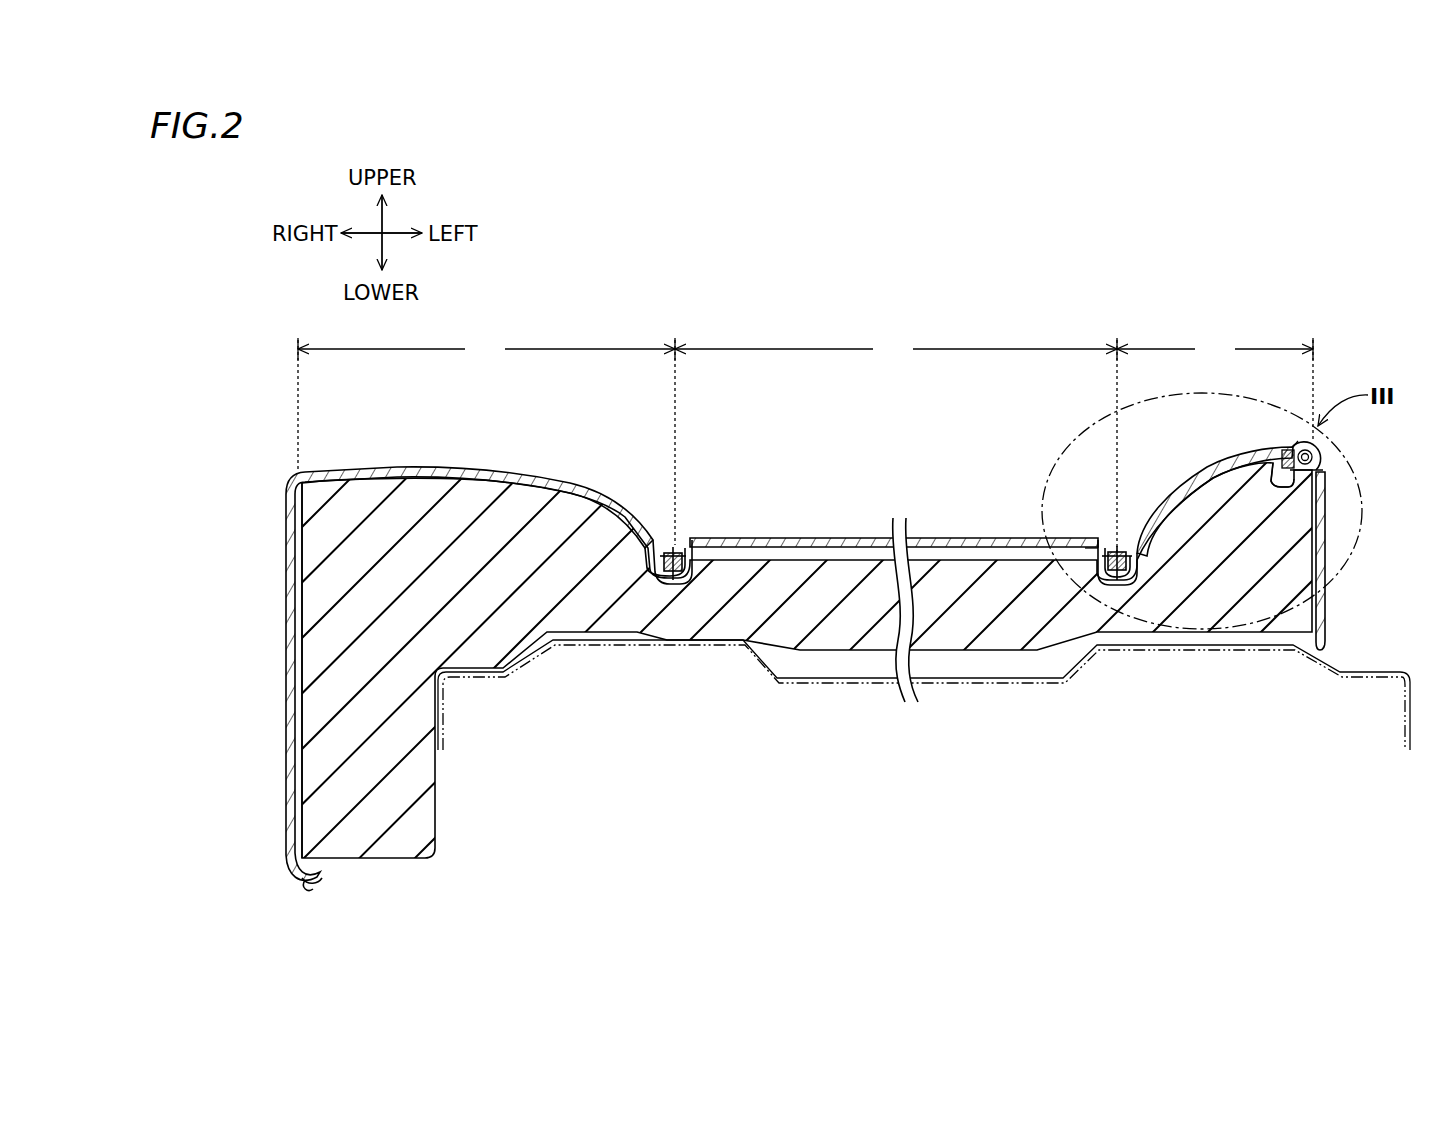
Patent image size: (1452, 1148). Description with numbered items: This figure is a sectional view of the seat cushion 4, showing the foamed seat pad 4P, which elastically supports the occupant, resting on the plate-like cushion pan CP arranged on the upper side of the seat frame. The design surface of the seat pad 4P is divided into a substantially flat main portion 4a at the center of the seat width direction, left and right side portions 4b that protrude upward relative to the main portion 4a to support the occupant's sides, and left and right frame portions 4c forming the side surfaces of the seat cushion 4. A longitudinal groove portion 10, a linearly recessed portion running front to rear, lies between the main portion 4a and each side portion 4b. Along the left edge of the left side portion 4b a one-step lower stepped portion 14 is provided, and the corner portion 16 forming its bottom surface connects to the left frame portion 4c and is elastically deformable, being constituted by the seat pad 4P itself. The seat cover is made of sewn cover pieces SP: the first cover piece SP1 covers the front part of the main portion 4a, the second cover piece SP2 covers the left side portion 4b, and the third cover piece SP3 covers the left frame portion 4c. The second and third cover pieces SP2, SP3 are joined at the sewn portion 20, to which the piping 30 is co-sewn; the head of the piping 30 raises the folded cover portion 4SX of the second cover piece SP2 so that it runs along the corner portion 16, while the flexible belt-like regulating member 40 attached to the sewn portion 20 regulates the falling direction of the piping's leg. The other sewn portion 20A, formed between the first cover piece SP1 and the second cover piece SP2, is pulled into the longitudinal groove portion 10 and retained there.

The seat cushion 4 is at (1065, 292).
The seat pad 4P is at (1280, 582).
The main portion 4a is at (896, 446).
The side portion 4b is at (805, 403).
The frame portion 4c is at (295, 662).
The cover portion 4SX is at (1320, 444).
The skin SP is at (400, 468).
The first cover piece SP1 is at (796, 538).
The second cover piece SP2 is at (1192, 485).
The third cover piece SP3 is at (1326, 607).
The longitudinal groove portion 10 is at (703, 542).
The stepped portion 14 is at (1283, 460).
The corner portion 16 is at (1322, 474).
The sewn portion 20 is at (1283, 445).
The other sewn portion 20A is at (1095, 545).
The piping 30 is at (1318, 456).
The regulating member 40 is at (1278, 478).
The cushion pan CP is at (440, 728).